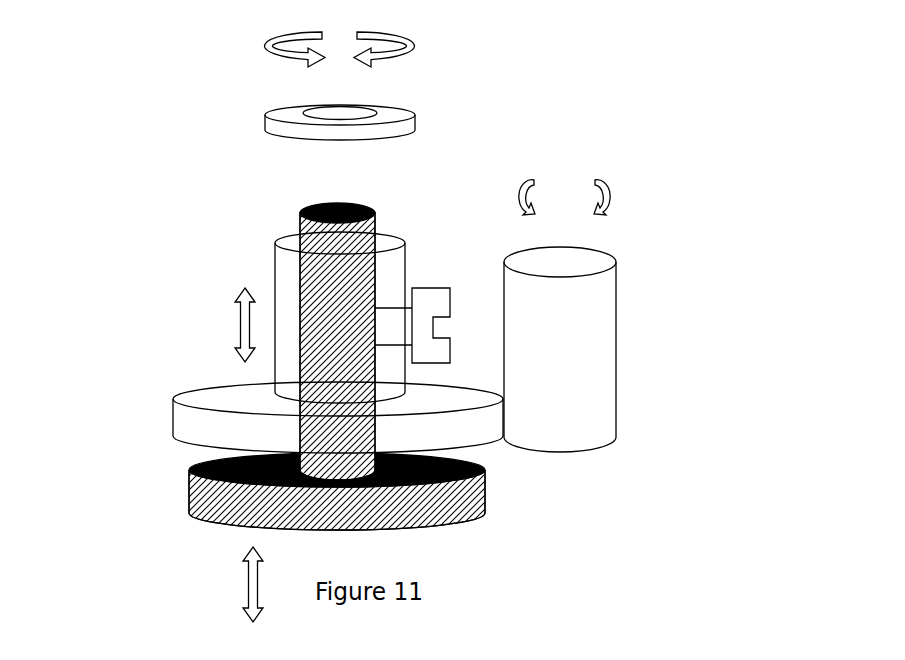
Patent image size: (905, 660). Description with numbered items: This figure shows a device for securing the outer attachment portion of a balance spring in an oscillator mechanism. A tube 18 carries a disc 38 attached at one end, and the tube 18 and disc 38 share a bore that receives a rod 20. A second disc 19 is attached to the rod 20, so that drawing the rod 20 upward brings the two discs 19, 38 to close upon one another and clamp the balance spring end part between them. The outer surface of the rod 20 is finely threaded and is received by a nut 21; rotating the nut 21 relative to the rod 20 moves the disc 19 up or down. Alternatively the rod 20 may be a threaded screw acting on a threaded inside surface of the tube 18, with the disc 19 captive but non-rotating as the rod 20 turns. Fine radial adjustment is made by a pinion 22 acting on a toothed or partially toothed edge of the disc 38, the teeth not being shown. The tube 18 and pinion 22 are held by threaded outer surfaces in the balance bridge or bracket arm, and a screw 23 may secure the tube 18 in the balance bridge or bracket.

The tube 18 is at (268, 279).
The disc 19 is at (182, 521).
The rod 20 is at (393, 222).
The nut 21 is at (254, 97).
The pinion 22 is at (609, 319).
The screw 23 is at (442, 360).
The disc 38 is at (158, 389).